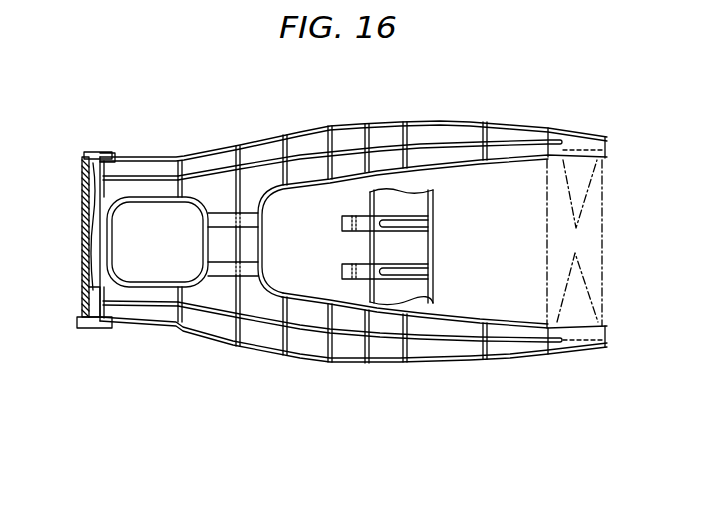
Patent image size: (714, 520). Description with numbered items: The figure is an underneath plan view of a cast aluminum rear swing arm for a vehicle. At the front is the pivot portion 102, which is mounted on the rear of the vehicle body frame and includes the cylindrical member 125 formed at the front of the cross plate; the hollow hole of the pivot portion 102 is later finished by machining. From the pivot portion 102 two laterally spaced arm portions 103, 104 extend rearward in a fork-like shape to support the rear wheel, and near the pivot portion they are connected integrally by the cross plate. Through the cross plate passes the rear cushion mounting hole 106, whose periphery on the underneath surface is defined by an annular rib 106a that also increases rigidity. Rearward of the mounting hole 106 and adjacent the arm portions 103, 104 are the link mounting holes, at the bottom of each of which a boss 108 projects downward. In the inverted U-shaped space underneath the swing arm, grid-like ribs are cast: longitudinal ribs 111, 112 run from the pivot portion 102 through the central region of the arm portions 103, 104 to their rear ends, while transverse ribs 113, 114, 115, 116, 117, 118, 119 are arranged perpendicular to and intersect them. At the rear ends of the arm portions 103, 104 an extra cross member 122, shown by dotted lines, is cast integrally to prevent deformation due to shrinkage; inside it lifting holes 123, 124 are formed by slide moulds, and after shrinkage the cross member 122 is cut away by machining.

The pivot portion 102 is at (87, 328).
The arm portion 103 is at (499, 114).
The arm portion 104 is at (449, 383).
The rear cushion mounting hole 106 is at (118, 225).
The annular rib 106a is at (118, 250).
The boss 108 is at (252, 213).
The longitudinal rib 111 is at (132, 172).
The longitudinal rib 112 is at (133, 306).
The transverse rib 113 is at (186, 160).
The transverse rib 114 is at (246, 145).
The transverse rib 115 is at (291, 133).
The transverse rib 116 is at (337, 128).
The transverse rib 117 is at (375, 124).
The transverse rib 118 is at (417, 123).
The transverse rib 119 is at (466, 125).
The cross member 122 is at (547, 202).
The lifting hole 123 is at (578, 150).
The lifting hole 124 is at (569, 312).
The cylindrical member 125 is at (84, 238).